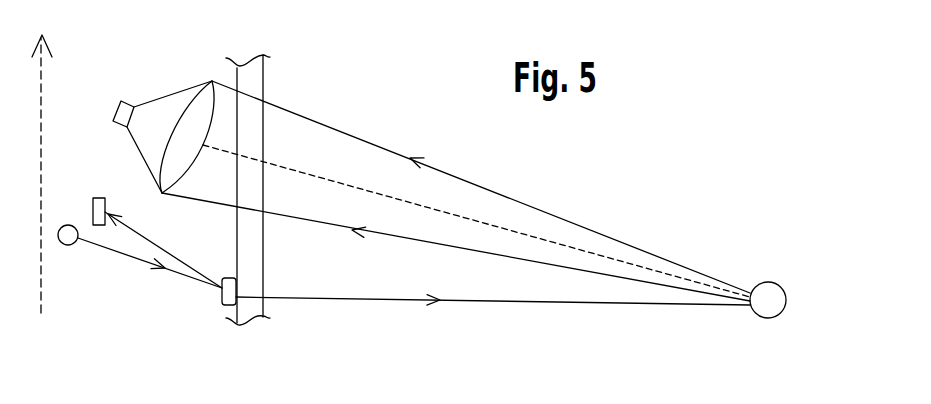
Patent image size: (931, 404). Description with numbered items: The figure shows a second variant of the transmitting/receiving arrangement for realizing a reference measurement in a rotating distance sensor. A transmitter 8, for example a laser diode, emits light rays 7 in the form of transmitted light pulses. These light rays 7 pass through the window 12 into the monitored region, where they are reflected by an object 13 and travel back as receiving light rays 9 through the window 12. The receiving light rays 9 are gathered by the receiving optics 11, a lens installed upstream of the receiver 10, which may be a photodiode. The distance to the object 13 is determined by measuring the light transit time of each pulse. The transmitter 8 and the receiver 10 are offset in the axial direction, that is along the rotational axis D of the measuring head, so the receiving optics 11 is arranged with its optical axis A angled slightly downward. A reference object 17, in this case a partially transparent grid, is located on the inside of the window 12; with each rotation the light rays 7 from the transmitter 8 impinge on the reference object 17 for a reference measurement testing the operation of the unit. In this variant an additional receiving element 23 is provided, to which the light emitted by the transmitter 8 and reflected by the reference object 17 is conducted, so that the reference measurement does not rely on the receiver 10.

The light rays 7 is at (498, 302).
The transmitter 8 is at (70, 226).
The receiving light rays 9 is at (323, 223).
The receiver 10 is at (118, 110).
The receiving optics 11 is at (197, 102).
The window 12 is at (257, 78).
The object 13 is at (770, 292).
The reference object 17 is at (222, 303).
The additional receiving element 23 is at (97, 198).
The optical axis A is at (593, 252).
The rotational axis D is at (42, 159).